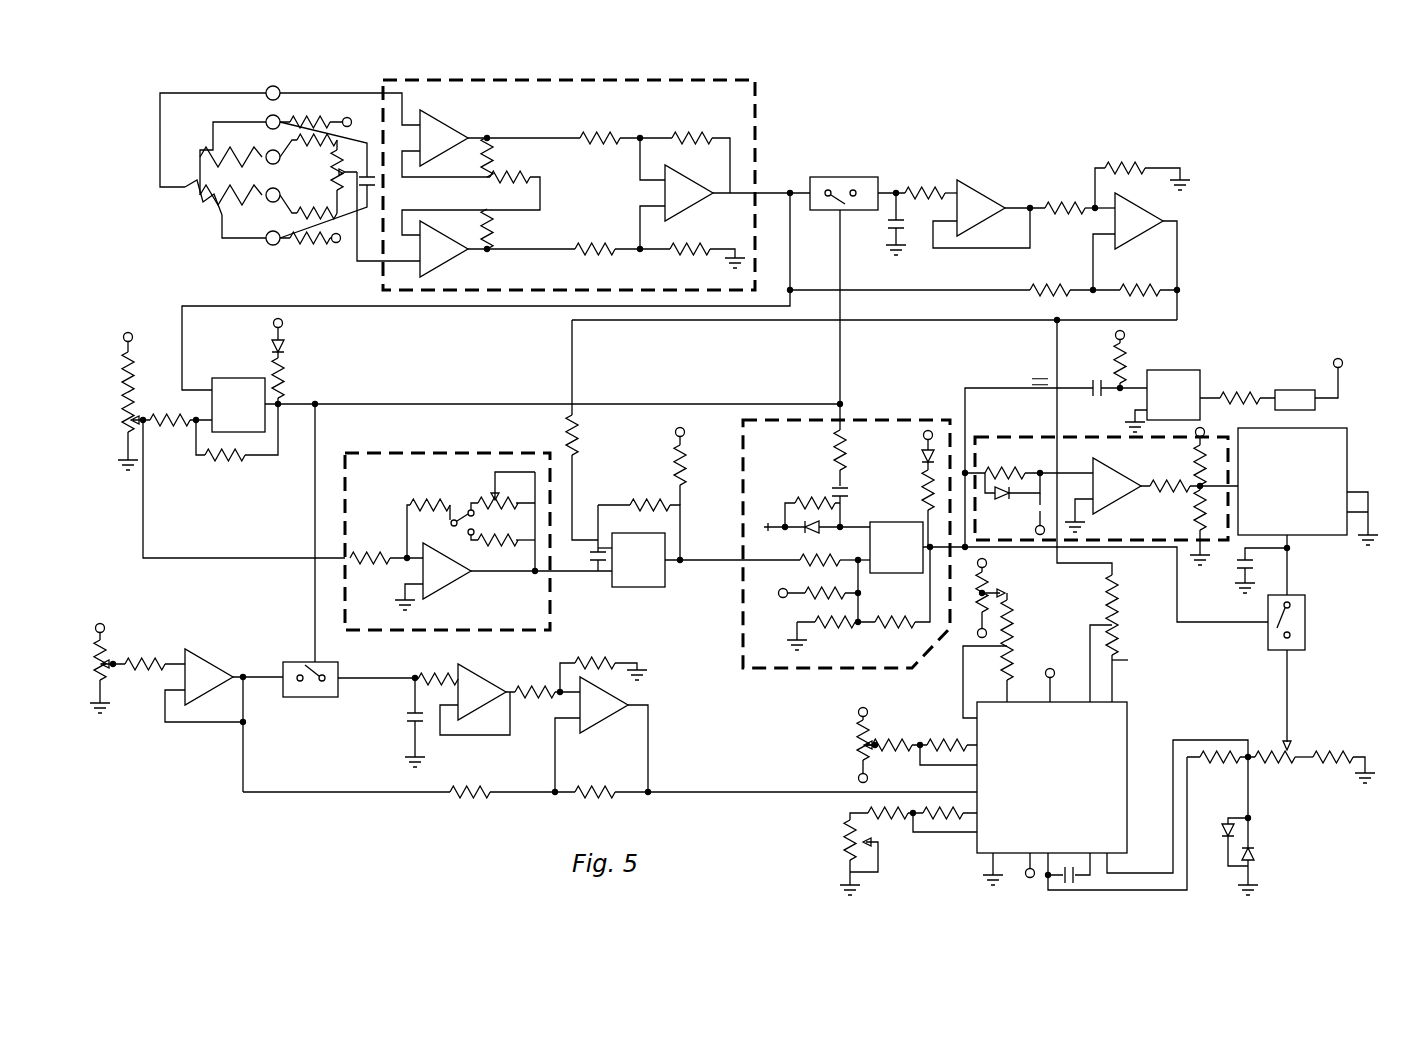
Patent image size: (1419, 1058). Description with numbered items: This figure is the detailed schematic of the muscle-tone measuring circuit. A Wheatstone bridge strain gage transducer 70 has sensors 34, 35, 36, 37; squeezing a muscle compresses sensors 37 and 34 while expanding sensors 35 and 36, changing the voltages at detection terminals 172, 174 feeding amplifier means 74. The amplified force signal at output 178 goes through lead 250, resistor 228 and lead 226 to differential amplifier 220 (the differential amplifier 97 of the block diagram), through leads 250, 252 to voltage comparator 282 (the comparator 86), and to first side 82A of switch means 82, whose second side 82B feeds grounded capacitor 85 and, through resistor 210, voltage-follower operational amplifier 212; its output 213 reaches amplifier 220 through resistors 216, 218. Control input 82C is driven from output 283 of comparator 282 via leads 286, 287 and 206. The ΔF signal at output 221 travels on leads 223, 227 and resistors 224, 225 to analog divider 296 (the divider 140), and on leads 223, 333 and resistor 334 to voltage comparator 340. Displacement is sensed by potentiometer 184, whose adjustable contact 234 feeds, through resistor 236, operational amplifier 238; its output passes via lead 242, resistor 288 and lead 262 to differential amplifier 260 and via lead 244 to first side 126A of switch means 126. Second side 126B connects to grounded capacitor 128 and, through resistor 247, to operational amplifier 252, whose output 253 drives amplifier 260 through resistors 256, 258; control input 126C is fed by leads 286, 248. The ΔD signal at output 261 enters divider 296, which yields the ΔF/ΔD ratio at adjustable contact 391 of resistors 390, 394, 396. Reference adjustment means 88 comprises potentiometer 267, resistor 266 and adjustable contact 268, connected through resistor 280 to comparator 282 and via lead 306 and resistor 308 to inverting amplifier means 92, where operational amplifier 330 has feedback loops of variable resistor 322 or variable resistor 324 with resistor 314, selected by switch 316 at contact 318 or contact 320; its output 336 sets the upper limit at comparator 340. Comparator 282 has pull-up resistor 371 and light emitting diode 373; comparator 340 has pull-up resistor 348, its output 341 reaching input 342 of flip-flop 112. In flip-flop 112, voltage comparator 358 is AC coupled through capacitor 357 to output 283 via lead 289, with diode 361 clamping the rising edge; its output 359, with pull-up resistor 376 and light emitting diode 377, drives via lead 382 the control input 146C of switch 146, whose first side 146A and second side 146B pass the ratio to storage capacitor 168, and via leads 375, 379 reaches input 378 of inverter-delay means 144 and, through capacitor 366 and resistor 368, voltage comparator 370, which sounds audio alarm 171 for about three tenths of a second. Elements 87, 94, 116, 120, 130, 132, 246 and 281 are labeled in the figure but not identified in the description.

The Wheatstone bridge strain gage transducer 70 is at (239, 183).
The sensor 34 is at (250, 158).
The sensor 35 is at (195, 153).
The sensor 36 is at (250, 195).
The sensor 37 is at (205, 208).
The detection terminal 172 is at (343, 82).
The detection terminal 174 is at (365, 266).
The amplifier means 74 is at (760, 92).
The output 178 is at (790, 188).
The switch means 82 is at (853, 247).
The first side 82A is at (808, 188).
The second side 82B is at (880, 190).
The control input 82C is at (838, 212).
The grounded capacitor 85 is at (893, 238).
The resistor 210 is at (925, 188).
The buffer amplifier 87 is at (972, 183).
The operational amplifier 212 is at (985, 198).
The output 213 is at (1008, 208).
The resistor 216 is at (1062, 205).
The resistor 218 is at (1122, 165).
The differential amplifier 97 is at (1178, 200).
The differential amplifier 220 is at (1150, 238).
The output 221 is at (1165, 222).
The lead 223 is at (1177, 318).
The lead 226 is at (1135, 288).
The resistor 228 is at (1040, 288).
The lead 250 is at (790, 265).
The lead 252 is at (485, 740).
The comparator 86 is at (256, 399).
The voltage comparator 282 is at (242, 378).
The light emitting diode 373 is at (284, 340).
The pull-up resistor 371 is at (284, 372).
The resistor 280 is at (150, 418).
The output 283 is at (272, 450).
The lead 286 is at (312, 402).
The reference adjustment means 88 is at (120, 403).
The resistor 266 is at (122, 360).
The potentiometer 267 is at (122, 428).
The adjustable contact 268 is at (136, 417).
The lead 306 is at (185, 556).
The lead 248 is at (312, 512).
The lead 333 is at (575, 358).
The resistor 334 is at (580, 430).
The output 336 is at (558, 588).
The voltage comparator 340 is at (632, 588).
The potentiometer 94 is at (652, 499).
The pull-up resistor 348 is at (683, 470).
The input 342 is at (738, 560).
The output 341 is at (672, 566).
The inverting amplifier means 92 is at (425, 453).
The resistor 308 is at (375, 553).
The resistor 314 is at (410, 502).
The switch 316 is at (452, 524).
The contact 318 is at (470, 508).
The contact 320 is at (472, 536).
The variable resistor 322 is at (500, 498).
The variable resistor 324 is at (506, 527).
The operational amplifier 330 is at (460, 582).
The flip-flop 112 is at (883, 418).
The lead 206 is at (845, 358).
The capacitor 357 is at (835, 485).
The diode 361 is at (808, 533).
The voltage comparator 358 is at (880, 520).
The output 359 is at (932, 565).
The light emitting diode 377 is at (922, 453).
The pull-up resistor 376 is at (922, 485).
The lead 382 is at (1030, 552).
The lead 227 is at (1053, 335).
The inverter-delay means 144 is at (1093, 436).
The capacitor 366 is at (1090, 385).
The resistor 368 is at (1125, 362).
The display amplifier 281 is at (1205, 352).
The voltage comparator 370 is at (1240, 380).
The audio alarm 171 is at (1320, 408).
The lead 379 is at (1101, 472).
The input 378 is at (980, 468).
The lead 375 is at (992, 520).
The capacitor 168 is at (1240, 575).
The switch 146 is at (1289, 611).
The first side 146A is at (1292, 652).
The second side 146B is at (1290, 595).
The control input 146C is at (1265, 630).
The offset circuit 116 is at (166, 693).
The potentiometer 184 is at (108, 650).
The adjustable contact 234 is at (115, 668).
The resistor 236 is at (160, 658).
The amplifier 120 is at (198, 642).
The operational amplifier 238 is at (205, 678).
The lead 244 is at (263, 682).
The switch means 126 is at (309, 569).
The first side 126A is at (290, 675).
The second side 126B is at (340, 676).
The control input 126C is at (312, 640).
The conductor 246 is at (378, 682).
The grounded capacitor 128 is at (412, 727).
The resistor 247 is at (440, 675).
The amplifier 130 is at (485, 664).
The output 253 is at (530, 690).
The resistor 256 is at (550, 693).
The resistor 258 is at (600, 660).
The differential amplifier 132 is at (624, 730).
The differential amplifier 260 is at (612, 730).
The output 261 is at (650, 706).
The lead 262 is at (553, 768).
The lead 242 is at (355, 794).
The resistor 288 is at (468, 797).
The voltage divider circuit 296 is at (1128, 812).
The divider 140 is at (1140, 690).
The resistor 224 is at (1110, 598).
The resistor 225 is at (1128, 660).
The resistor 390 is at (1222, 762).
The resistor 394 is at (1270, 762).
The adjustable contact 391 is at (1292, 748).
The resistor 396 is at (1343, 762).
The lead 287 is at (718, 401).
The lead 289 is at (838, 403).